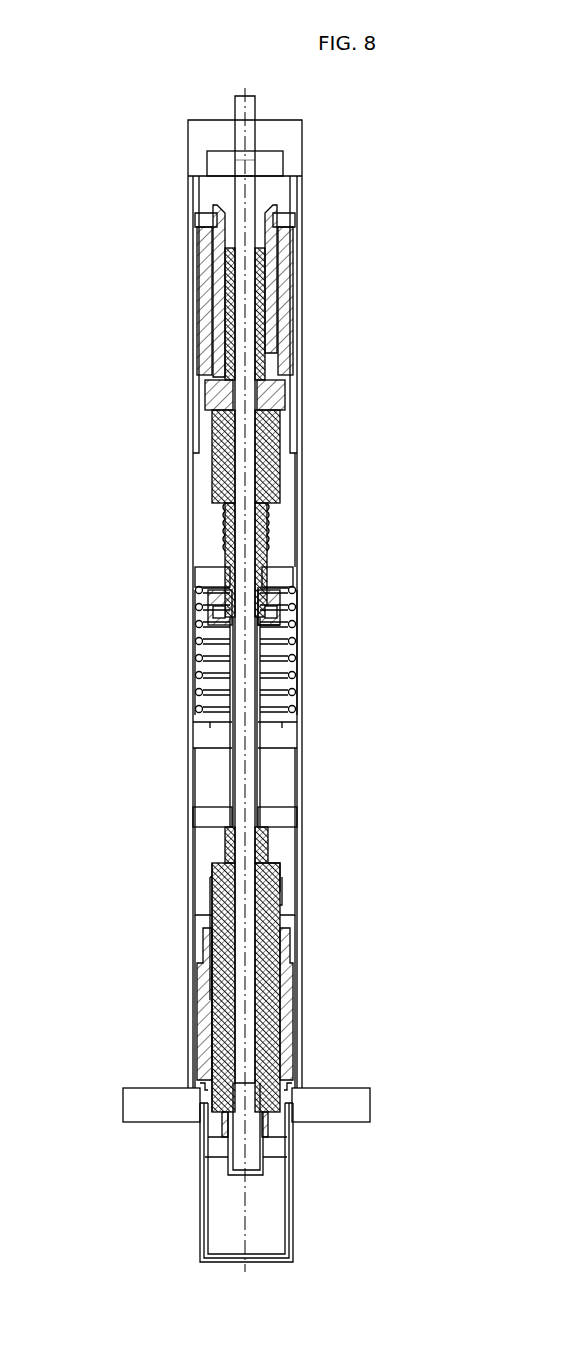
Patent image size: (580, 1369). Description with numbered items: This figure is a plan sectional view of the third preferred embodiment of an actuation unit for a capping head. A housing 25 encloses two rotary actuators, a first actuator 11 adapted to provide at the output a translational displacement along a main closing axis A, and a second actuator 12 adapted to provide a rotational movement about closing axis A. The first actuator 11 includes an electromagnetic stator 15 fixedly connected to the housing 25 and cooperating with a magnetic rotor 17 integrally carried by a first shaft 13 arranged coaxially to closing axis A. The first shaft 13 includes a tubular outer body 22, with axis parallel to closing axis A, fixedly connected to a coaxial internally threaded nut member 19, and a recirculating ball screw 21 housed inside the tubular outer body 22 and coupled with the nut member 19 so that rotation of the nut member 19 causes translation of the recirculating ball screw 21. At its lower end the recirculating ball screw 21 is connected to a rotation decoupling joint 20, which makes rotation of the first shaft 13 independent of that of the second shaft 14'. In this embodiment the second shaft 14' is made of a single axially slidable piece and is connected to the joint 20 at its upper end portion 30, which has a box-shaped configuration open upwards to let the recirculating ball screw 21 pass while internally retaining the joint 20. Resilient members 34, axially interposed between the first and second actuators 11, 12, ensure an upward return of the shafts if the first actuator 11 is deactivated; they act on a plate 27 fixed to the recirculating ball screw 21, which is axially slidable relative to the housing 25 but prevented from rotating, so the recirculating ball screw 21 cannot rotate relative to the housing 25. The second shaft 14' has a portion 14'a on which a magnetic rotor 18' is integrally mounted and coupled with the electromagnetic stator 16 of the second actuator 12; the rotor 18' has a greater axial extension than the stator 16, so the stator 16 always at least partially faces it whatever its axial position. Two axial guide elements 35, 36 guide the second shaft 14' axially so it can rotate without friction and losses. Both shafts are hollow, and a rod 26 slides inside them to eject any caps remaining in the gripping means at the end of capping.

The first actuator 11 is at (192, 294).
The second actuator 12 is at (192, 965).
The first shaft 13 is at (87, 450).
The second shaft 14' is at (196, 935).
The portion of the second shaft 14'a is at (328, 885).
The electromagnetic stator 15 is at (208, 330).
The electromagnetic stator 16 is at (205, 1000).
The magnetic rotor 17 is at (214, 332).
The magnetic rotor 18' is at (172, 987).
The nut member 19 is at (213, 472).
The rotation decoupling joint 20 is at (280, 590).
The recirculating ball screw 21 is at (225, 542).
The tubular outer body 22 is at (210, 391).
The housing 25 is at (188, 738).
The rod 26 is at (250, 130).
The plate 27 is at (278, 565).
The upper end portion 30 is at (280, 588).
The resilient members 34 is at (290, 683).
The axial guide element 35 is at (275, 807).
The axial guide element 36 is at (280, 1157).
The main closing axis A is at (247, 163).